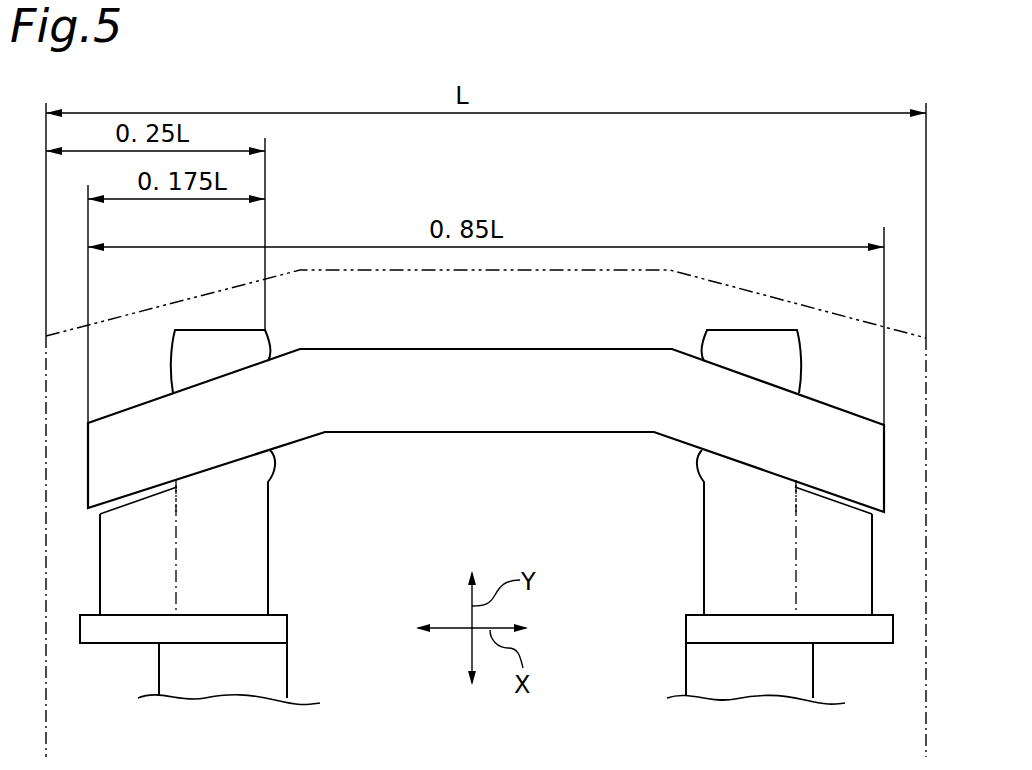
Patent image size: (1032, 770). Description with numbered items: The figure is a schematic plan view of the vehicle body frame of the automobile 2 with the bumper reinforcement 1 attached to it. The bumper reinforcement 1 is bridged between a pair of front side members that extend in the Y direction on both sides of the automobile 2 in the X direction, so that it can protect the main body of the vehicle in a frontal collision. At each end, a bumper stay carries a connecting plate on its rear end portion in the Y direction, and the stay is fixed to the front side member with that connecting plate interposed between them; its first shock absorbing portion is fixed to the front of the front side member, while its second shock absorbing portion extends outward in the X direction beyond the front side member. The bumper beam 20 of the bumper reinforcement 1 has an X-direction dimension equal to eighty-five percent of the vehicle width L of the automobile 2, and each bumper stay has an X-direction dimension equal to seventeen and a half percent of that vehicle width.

The bumper reinforcement 1 is at (548, 330).
The automobile 2 is at (769, 288).
The bumper beam 20 is at (484, 452).